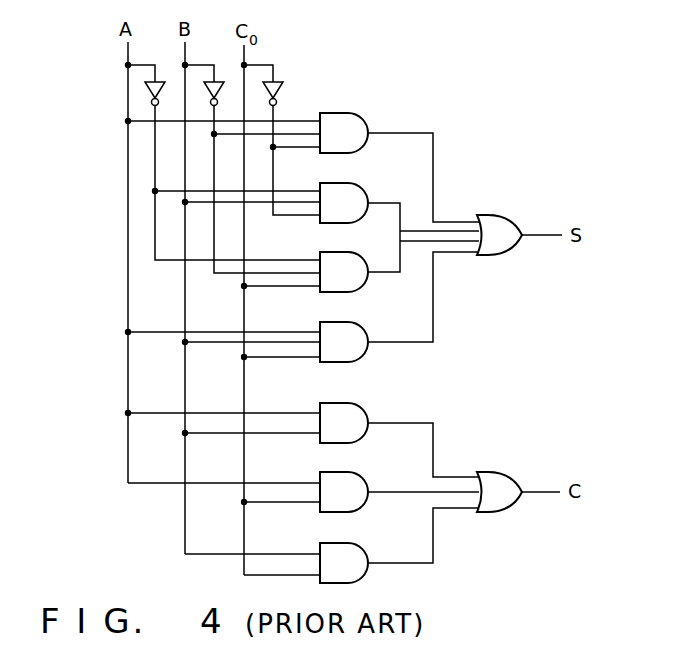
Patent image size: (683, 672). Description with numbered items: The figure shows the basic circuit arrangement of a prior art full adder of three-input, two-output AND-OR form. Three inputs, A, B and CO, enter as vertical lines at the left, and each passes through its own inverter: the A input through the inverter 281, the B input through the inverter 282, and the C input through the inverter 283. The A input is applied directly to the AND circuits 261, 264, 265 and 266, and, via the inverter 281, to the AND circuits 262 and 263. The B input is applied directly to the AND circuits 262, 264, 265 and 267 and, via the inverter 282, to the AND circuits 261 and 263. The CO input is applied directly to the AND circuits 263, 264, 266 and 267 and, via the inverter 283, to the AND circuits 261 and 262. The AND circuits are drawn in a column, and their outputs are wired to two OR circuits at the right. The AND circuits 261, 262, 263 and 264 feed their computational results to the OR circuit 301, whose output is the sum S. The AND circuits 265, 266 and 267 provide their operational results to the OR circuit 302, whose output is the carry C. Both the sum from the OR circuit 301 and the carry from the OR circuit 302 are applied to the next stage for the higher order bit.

The inverter 281 is at (159, 81).
The inverter 282 is at (218, 81).
The inverter 283 is at (277, 81).
The AND circuit 261 is at (353, 117).
The AND circuit 262 is at (353, 187).
The AND circuit 263 is at (353, 256).
The AND circuit 264 is at (353, 326).
The AND circuit 265 is at (353, 407).
The AND circuit 266 is at (353, 476).
The AND circuit 267 is at (355, 547).
The OR circuit 301 is at (512, 247).
The OR circuit 302 is at (505, 477).